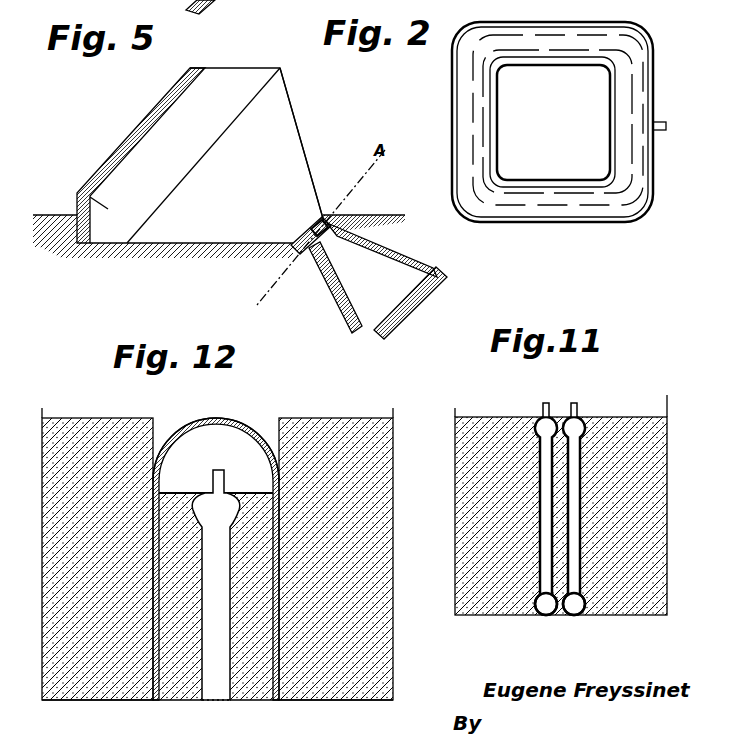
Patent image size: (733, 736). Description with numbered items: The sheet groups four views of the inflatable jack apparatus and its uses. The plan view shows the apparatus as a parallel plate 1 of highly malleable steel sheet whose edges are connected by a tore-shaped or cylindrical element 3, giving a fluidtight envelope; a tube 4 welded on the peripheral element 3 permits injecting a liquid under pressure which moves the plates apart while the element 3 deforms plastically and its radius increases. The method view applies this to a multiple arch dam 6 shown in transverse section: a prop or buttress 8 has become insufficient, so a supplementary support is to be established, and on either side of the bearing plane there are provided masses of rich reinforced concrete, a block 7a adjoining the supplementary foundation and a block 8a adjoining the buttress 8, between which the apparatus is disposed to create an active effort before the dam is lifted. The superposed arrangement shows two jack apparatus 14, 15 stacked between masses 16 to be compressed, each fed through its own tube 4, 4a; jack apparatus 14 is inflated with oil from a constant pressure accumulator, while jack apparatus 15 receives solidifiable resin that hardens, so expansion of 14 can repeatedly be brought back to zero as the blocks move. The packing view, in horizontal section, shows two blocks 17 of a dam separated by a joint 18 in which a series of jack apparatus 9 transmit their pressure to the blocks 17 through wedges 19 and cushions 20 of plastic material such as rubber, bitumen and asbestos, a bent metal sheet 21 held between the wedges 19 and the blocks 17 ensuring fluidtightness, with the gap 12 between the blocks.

In FIG. 2, the plate 1 is at (552, 122).
In FIG. 2, the tore-shaped or cylindrical element 3 is at (460, 76).
In FIG. 5, the tube 4 is at (400, 281).
In FIG. 2, the tube 4 is at (662, 122).
In FIG. 11, the tube 4 is at (546, 498).
In FIG. 11, the second conduit 4a is at (576, 499).
In FIG. 5, the multiple arch dam 6 is at (140, 143).
In FIG. 5, the concrete block 7a is at (312, 257).
In FIG. 5, the prop or buttress 8 is at (285, 109).
In FIG. 5, the concrete block 8a is at (322, 212).
In FIG. 5, the jack apparatus 9 is at (302, 242).
In FIG. 12, the jack apparatus 9 is at (218, 470).
In FIG. 11, the joint gap 12 is at (581, 417).
In FIG. 11, the jack apparatus 14 is at (546, 615).
In FIG. 11, the jack apparatus 15 is at (575, 615).
In FIG. 11, the masses or blocks 16 is at (473, 424).
In FIG. 12, the dam block 17 is at (87, 430).
In FIG. 12, the joint 18 is at (216, 555).
In FIG. 12, the wedge 19 is at (188, 492).
In FIG. 12, the cushion 20 is at (155, 700).
In FIG. 12, the metal sheet 21 is at (251, 429).